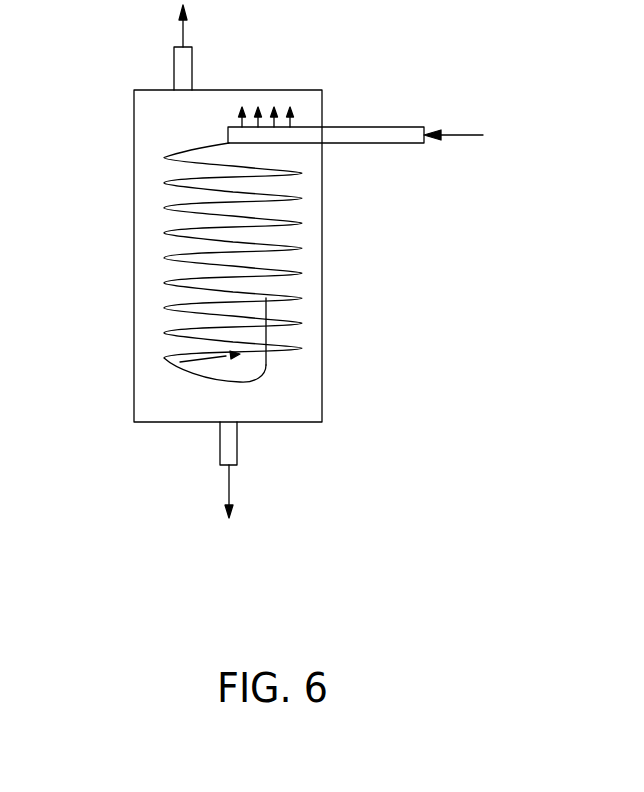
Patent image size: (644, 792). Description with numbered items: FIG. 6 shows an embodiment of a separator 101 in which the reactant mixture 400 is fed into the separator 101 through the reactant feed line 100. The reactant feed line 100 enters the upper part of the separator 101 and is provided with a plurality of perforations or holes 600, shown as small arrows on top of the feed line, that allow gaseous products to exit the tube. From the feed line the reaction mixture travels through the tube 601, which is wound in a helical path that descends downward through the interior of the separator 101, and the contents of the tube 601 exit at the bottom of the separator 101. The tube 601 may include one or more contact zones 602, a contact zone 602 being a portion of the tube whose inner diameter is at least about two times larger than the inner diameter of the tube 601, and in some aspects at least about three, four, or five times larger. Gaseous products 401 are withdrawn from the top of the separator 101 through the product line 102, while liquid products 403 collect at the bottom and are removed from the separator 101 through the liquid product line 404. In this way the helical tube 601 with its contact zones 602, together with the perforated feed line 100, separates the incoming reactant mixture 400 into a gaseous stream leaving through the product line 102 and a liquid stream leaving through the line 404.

The reactant feed line 100 is at (360, 128).
The separator 101 is at (137, 235).
The product line 102 is at (192, 65).
The reactant mixture 400 is at (458, 134).
The gaseous products 401 is at (182, 31).
The liquid products 403 is at (229, 487).
The liquid product line 404 is at (220, 443).
The perforations or holes 600 is at (258, 128).
The tube 601 is at (167, 157).
The contact zone 602 is at (180, 362).